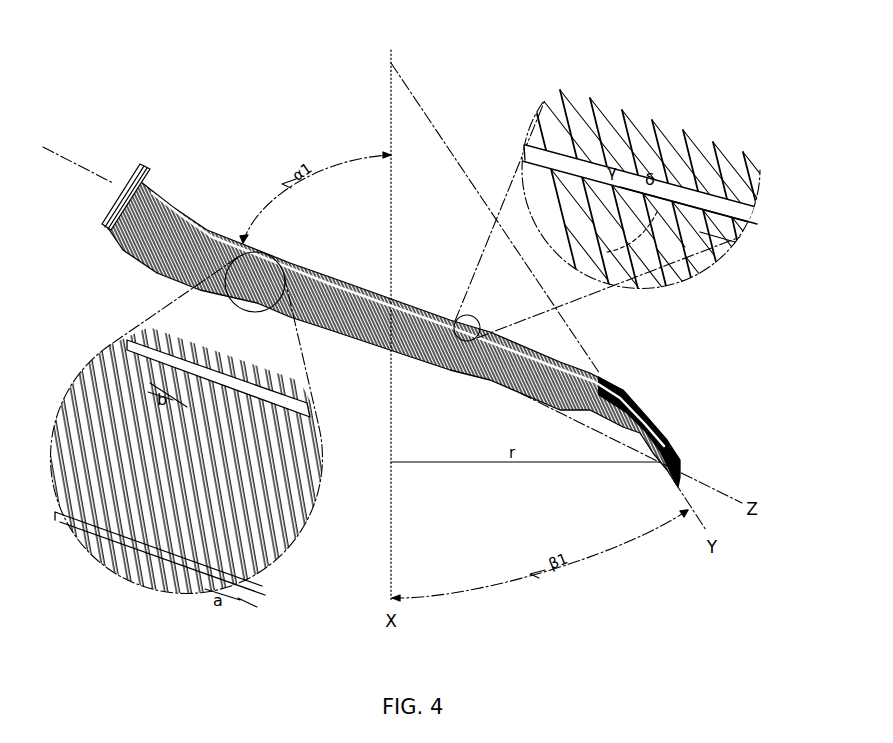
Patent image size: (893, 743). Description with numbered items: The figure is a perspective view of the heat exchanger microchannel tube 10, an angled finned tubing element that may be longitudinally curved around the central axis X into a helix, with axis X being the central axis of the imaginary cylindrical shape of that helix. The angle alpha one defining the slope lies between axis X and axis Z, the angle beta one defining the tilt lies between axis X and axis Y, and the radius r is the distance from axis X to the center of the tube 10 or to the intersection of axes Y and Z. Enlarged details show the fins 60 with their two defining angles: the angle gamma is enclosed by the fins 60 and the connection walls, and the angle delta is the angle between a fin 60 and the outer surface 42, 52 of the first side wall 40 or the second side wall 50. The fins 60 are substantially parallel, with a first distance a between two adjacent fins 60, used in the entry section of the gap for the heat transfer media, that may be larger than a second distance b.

The heat exchanger microchannel tube 10 is at (247, 134).
The first side wall 40 is at (680, 180).
The outer surface 42 is at (737, 200).
The second side wall 50 is at (733, 235).
The outer surface 52 is at (543, 162).
The fins 60 is at (203, 577).